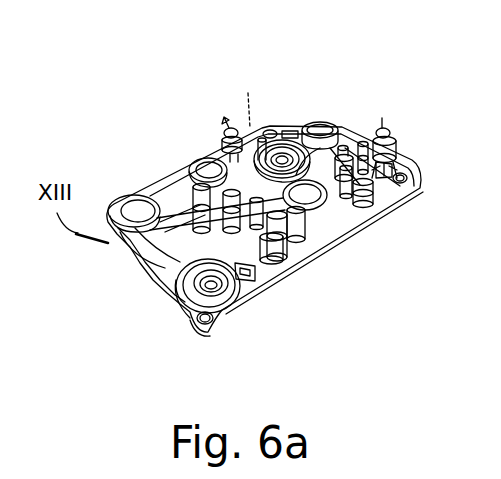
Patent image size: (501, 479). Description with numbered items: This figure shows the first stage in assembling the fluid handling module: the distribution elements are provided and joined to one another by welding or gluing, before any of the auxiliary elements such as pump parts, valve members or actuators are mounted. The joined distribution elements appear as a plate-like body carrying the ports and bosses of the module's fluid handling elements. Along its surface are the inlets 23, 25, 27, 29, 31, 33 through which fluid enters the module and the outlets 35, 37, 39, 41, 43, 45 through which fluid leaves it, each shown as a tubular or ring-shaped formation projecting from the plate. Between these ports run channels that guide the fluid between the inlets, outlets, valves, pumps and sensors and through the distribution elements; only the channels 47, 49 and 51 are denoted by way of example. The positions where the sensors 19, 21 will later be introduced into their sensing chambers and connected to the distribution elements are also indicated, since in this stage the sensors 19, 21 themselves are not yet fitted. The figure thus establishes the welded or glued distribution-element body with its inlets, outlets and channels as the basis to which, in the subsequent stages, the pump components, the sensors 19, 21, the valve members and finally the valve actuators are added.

The sensor 19 is at (325, 124).
The sensor 21 is at (250, 290).
The inlet 23 is at (196, 166).
The inlet 25 is at (172, 218).
The inlet 27 is at (178, 298).
The inlet 29 is at (284, 250).
The inlet 31 is at (382, 177).
The inlet 33 is at (385, 120).
The outlet 35 is at (228, 128).
The outlet 37 is at (203, 160).
The outlet 39 is at (300, 262).
The outlet 41 is at (311, 237).
The outlet 43 is at (349, 143).
The outlet 45 is at (368, 204).
The channel 47 is at (143, 238).
The channel 49 is at (262, 118).
The channel 51 is at (302, 124).